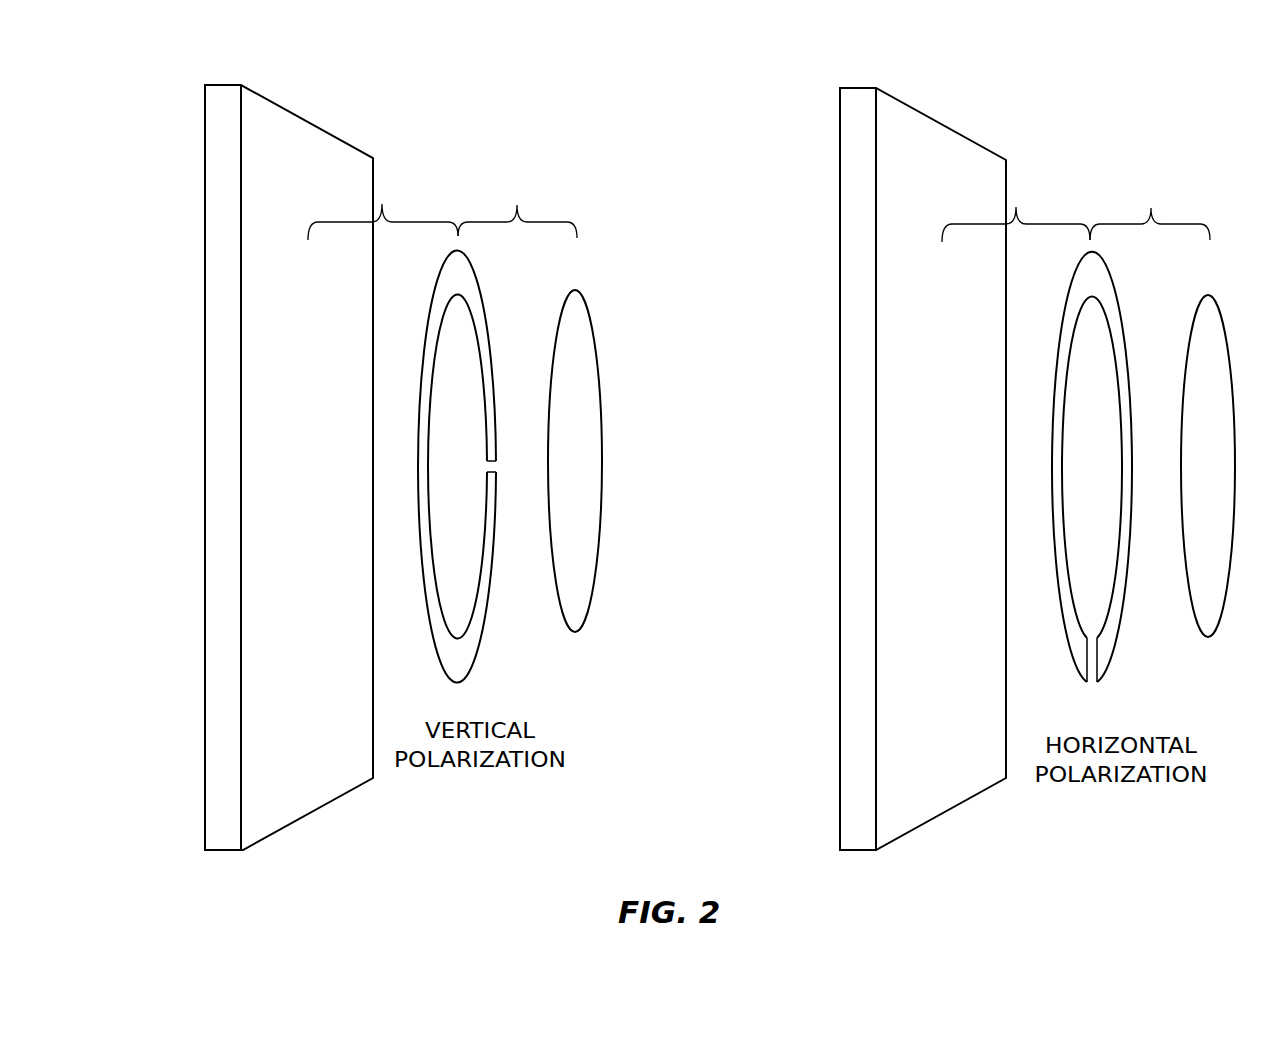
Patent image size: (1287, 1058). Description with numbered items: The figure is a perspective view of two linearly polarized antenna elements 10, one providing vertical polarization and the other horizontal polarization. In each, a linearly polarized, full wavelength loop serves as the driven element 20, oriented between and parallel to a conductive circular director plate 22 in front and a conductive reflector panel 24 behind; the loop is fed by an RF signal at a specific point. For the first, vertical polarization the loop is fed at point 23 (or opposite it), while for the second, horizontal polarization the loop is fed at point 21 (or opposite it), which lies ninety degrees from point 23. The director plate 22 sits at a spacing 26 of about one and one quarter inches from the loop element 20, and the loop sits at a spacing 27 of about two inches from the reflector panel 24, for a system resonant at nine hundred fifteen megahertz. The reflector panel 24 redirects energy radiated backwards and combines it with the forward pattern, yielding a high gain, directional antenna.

The antenna element 10 is at (526, 922).
The driven element 20 is at (783, 488).
The feed point of the second polarization 21 is at (1088, 704).
The director plate 22 is at (587, 537).
The feed point of the first polarization 23 is at (509, 469).
The reflector panel 24 is at (335, 780).
The spacing 26 is at (834, 209).
The spacing 27 is at (699, 210).